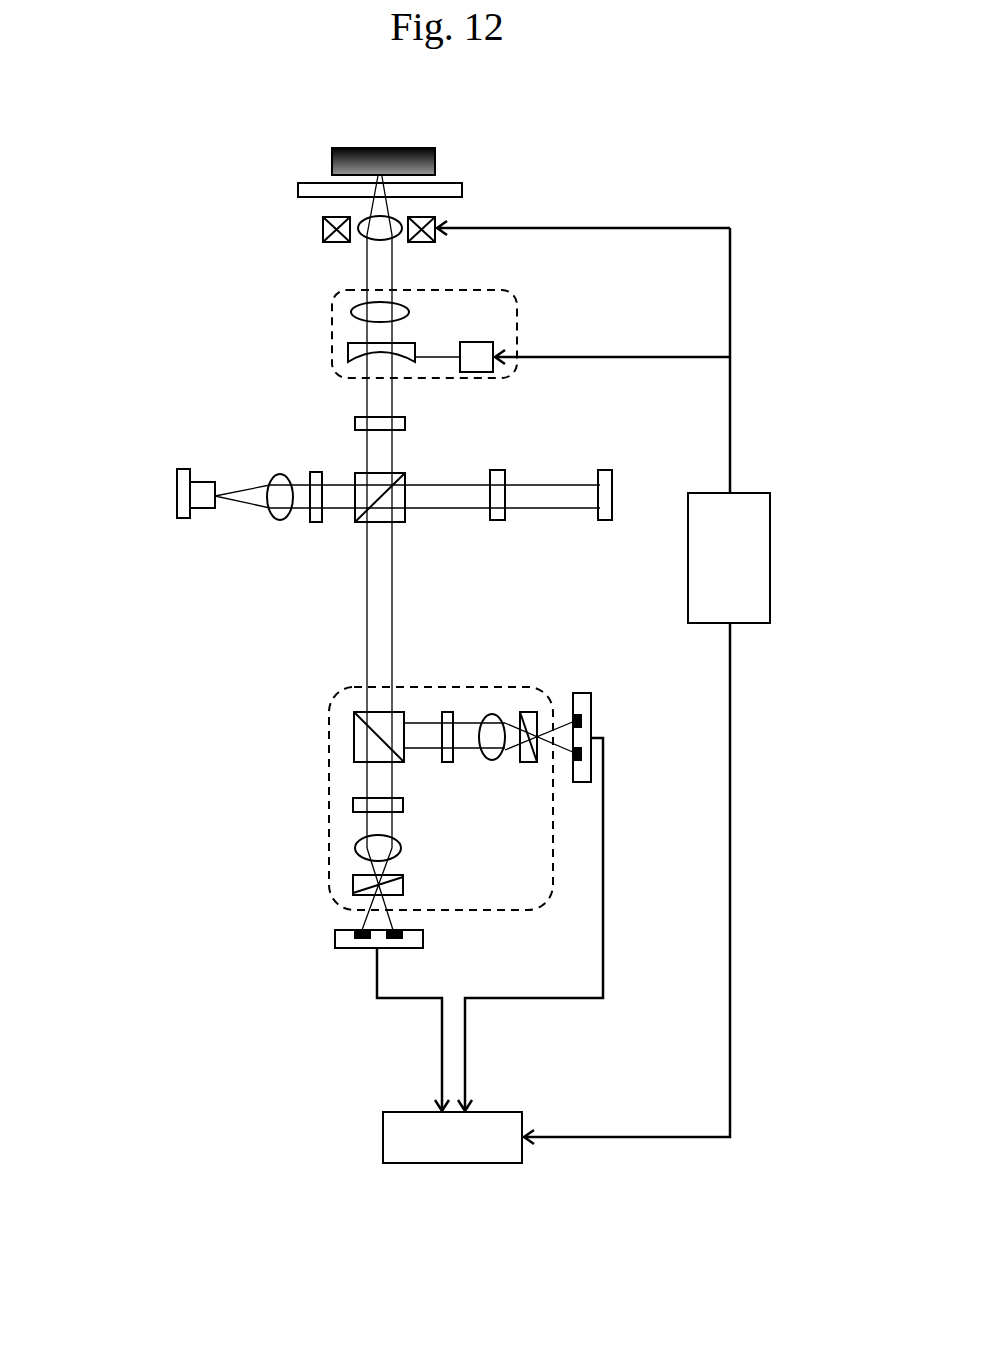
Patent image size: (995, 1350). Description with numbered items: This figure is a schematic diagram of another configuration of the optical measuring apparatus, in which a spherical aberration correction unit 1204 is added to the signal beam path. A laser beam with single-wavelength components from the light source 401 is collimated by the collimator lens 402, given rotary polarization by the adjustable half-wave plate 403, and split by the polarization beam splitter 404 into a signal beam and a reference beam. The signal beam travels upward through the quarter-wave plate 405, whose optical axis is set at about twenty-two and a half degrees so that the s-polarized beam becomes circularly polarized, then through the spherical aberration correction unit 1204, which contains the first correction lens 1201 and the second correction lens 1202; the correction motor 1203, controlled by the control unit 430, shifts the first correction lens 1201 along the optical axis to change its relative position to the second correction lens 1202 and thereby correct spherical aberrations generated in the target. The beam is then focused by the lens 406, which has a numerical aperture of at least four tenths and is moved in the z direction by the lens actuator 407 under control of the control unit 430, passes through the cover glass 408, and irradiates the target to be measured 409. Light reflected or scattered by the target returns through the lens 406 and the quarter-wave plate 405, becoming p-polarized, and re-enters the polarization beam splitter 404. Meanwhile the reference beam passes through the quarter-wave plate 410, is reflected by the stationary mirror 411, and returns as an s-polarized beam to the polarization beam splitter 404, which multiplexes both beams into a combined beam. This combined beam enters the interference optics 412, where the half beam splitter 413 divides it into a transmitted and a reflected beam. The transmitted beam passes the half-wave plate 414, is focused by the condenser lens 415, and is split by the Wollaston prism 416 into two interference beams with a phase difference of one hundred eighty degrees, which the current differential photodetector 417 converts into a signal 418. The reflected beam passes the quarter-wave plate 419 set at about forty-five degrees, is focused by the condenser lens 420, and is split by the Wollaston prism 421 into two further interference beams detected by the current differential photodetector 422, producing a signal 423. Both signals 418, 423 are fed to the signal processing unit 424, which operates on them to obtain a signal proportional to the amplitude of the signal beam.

The light source 401 is at (177, 486).
The collimator lens 402 is at (270, 478).
The λ/2 plate 403 is at (312, 522).
The polarization beam splitter 404 is at (355, 473).
The λ/4 plate 405 is at (355, 420).
The lens 406 is at (398, 238).
The lens actuator 407 is at (430, 217).
The cover glass 408 is at (298, 190).
The target to be measured 409 is at (332, 160).
The λ/4 plate 410 is at (497, 470).
The stationary mirror 411 is at (605, 470).
The interference optics 412 is at (543, 905).
The half beam splitter 413 is at (354, 730).
The λ/2 plate 414 is at (403, 805).
The condenser lens 415 is at (401, 848).
The Wollaston prism 416 is at (403, 885).
The current differential photodetector 417 is at (423, 940).
The signal 418 is at (377, 975).
The λ/4 plate 419 is at (447, 712).
The condenser lens 420 is at (492, 712).
The Wollaston prism 421 is at (530, 712).
The current differential photodetector 422 is at (588, 693).
The signal 423 is at (605, 760).
The signal processing unit 424 is at (422, 1163).
The control unit 430 is at (752, 493).
The first correction lens 1201 is at (348, 345).
The second correction lens 1202 is at (351, 305).
The correction motor 1203 is at (490, 342).
The spherical aberration correction unit 1204 is at (332, 368).